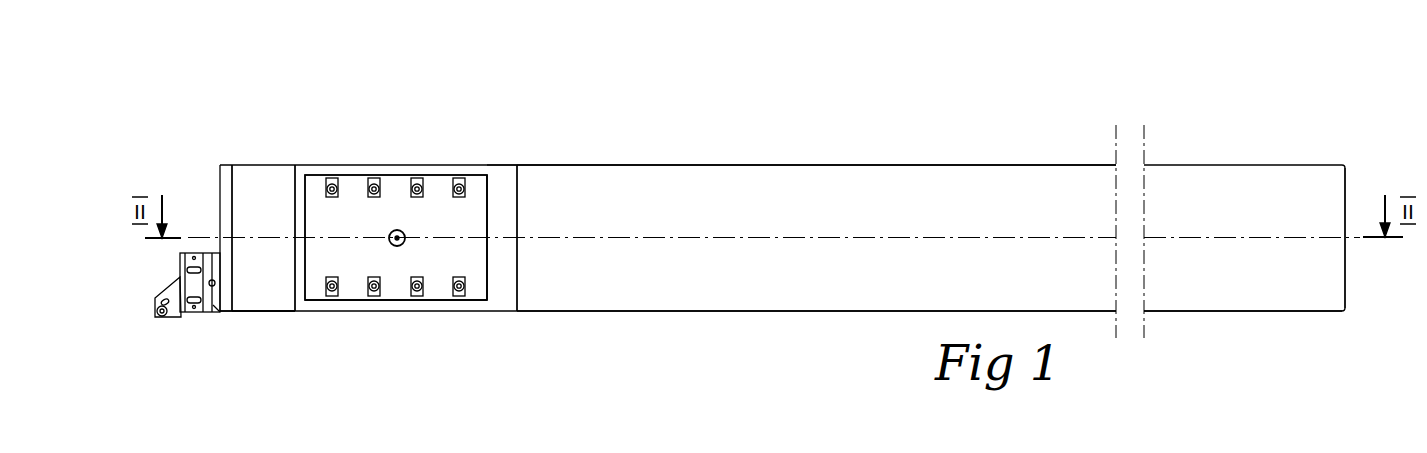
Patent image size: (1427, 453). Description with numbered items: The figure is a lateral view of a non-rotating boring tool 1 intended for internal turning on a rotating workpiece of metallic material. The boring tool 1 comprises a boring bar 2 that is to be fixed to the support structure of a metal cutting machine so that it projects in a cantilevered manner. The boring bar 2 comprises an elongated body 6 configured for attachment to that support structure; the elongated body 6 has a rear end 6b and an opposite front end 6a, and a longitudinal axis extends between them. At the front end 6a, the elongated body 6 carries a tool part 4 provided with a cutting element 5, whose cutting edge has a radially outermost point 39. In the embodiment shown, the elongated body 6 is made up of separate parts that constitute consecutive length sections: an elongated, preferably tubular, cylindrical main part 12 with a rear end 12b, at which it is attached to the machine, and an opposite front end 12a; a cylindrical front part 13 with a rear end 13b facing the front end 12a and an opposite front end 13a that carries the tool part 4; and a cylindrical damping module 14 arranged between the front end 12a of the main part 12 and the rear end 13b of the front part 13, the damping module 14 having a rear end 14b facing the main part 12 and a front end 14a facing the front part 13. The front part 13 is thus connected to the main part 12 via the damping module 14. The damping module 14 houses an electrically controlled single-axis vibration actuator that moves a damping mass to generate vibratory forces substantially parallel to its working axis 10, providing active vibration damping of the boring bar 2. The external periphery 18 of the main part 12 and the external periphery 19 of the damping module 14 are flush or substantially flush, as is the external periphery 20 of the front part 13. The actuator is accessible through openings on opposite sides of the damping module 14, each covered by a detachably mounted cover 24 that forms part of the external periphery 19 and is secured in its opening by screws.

The non-rotating boring tool 1 is at (599, 92).
The boring bar 2 is at (761, 134).
The tool part 4 is at (220, 248).
The cutting element 5 is at (158, 313).
The elongated body 6 is at (607, 328).
The front end of the elongated body 6a is at (232, 318).
The rear end of the elongated body 6b is at (1343, 315).
The working axis of the actuator 10 is at (397, 238).
The main part 12 is at (687, 178).
The front end of the main part 12a is at (518, 160).
The rear end of the main part 12b is at (1342, 160).
The front part 13 is at (274, 182).
The front end of the front part 13a is at (233, 163).
The rear end of the front part 13b is at (295, 163).
The damping module 14 is at (462, 172).
The front end of the damping module 14a is at (296, 315).
The rear end of the damping module 14b is at (513, 315).
The external periphery of the main part 18 is at (647, 165).
The external periphery of the damping module 19 is at (492, 165).
The external periphery of the front part 20 is at (273, 312).
The cover 24 is at (434, 278).
The radially outermost point of the cutting edge 39 is at (160, 315).